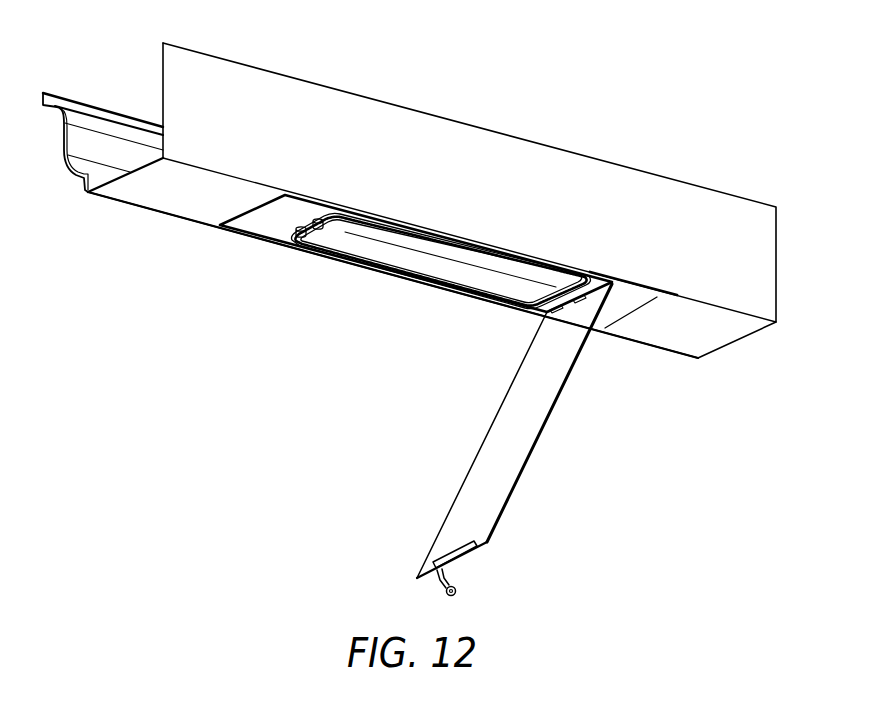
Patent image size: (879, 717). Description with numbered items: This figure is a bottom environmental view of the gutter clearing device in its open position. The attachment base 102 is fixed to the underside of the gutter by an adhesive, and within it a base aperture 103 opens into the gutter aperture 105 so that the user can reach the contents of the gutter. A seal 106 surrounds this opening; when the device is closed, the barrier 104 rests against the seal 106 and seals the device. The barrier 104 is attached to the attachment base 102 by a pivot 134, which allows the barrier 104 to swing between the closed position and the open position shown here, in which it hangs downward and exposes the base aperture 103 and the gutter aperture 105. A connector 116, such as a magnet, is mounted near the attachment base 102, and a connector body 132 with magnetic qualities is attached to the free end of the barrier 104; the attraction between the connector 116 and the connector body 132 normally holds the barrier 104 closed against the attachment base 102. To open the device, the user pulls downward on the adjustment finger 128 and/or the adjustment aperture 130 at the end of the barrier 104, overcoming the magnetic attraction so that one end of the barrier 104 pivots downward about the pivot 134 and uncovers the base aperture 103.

The attachment base 102 is at (263, 227).
The base aperture 103 is at (413, 255).
The barrier 104 is at (553, 415).
The gutter aperture 105 is at (493, 277).
The seal 106 is at (460, 242).
The connector 116 is at (320, 220).
The adjustment finger 128 is at (438, 588).
The adjustment aperture 130 is at (458, 590).
The connector body 132 is at (452, 550).
The pivot 134 is at (610, 280).